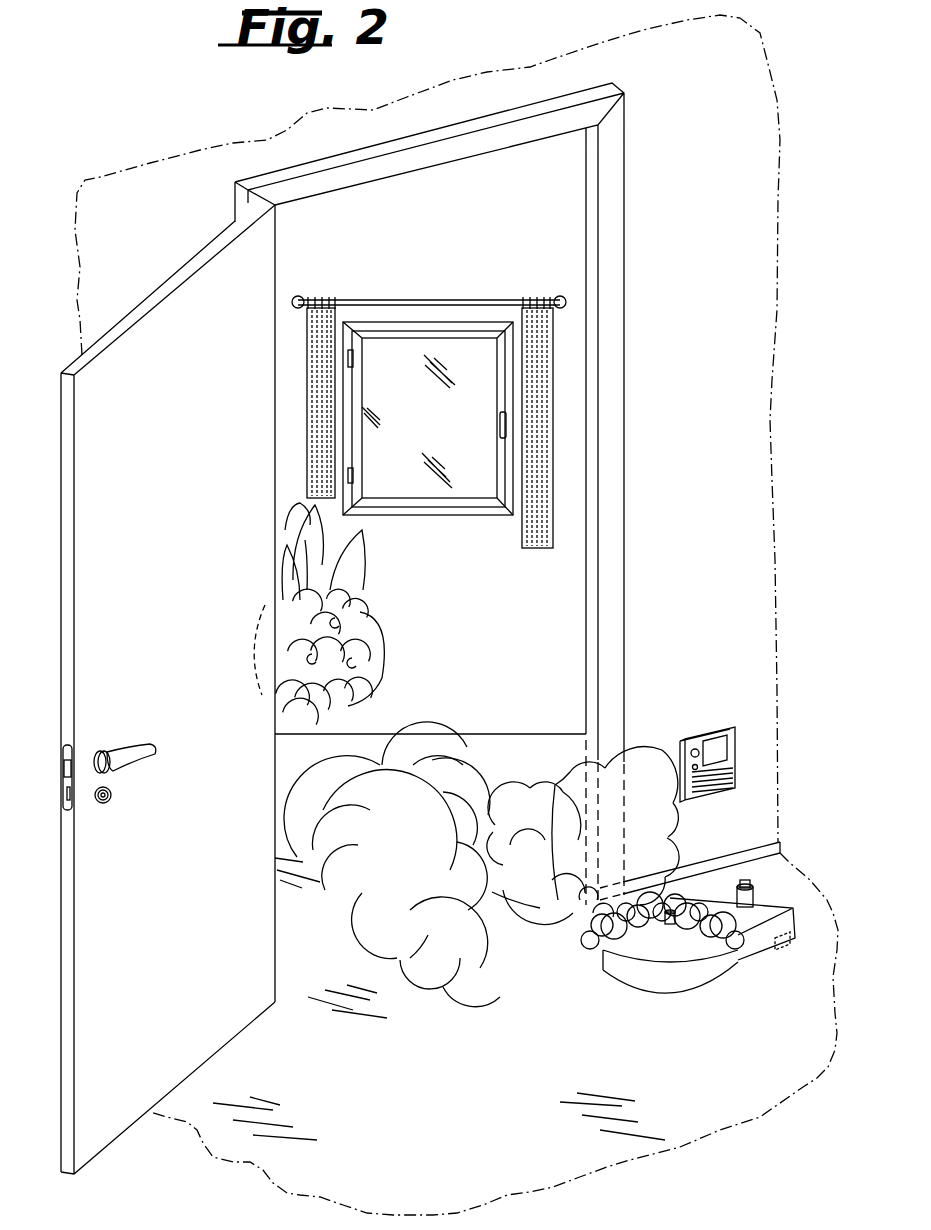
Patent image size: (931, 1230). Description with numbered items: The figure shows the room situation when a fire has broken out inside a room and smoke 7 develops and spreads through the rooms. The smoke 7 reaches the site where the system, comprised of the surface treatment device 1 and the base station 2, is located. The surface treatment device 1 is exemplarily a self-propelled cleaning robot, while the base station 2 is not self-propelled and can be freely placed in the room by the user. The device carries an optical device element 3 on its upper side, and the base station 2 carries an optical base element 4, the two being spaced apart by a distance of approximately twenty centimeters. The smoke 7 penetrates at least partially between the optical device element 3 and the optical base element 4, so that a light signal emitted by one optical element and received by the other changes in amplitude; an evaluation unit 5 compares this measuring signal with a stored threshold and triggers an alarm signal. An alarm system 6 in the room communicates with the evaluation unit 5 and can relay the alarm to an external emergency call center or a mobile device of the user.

The surface treatment device 1 is at (685, 975).
The base station 2 is at (770, 907).
The optical device element 3 is at (675, 920).
The optical base element 4 is at (753, 888).
The evaluation unit 5 is at (787, 952).
The alarm system 6 is at (735, 752).
The smoke 7 is at (437, 778).